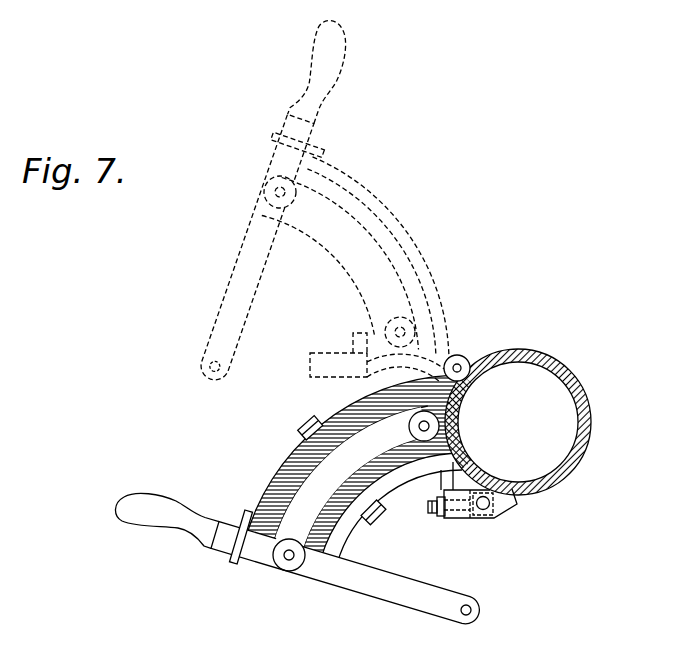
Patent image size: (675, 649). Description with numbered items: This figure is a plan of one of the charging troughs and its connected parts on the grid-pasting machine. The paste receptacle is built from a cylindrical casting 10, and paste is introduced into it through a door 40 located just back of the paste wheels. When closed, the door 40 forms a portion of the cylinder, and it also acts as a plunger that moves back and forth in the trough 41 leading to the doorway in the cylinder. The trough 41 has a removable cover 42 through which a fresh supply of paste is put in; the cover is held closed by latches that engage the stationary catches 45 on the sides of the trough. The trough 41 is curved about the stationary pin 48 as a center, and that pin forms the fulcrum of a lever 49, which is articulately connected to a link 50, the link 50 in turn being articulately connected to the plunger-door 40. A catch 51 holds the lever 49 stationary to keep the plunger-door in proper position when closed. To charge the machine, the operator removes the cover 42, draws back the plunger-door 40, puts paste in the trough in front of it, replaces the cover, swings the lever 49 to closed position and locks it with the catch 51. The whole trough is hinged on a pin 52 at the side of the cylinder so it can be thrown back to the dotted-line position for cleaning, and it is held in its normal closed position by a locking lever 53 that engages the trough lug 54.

The casting 10 is at (593, 423).
The door 40 is at (458, 427).
The trough 41 is at (284, 471).
The removable cover 42 is at (347, 432).
The stationary catch 45 is at (316, 424).
The stationary pin 48 is at (470, 609).
The lever 49 is at (373, 590).
The link 50 is at (256, 181).
The catch 51 is at (243, 551).
The pin 52 is at (461, 366).
The lever 53 is at (431, 516).
The trough lug 54 is at (463, 514).